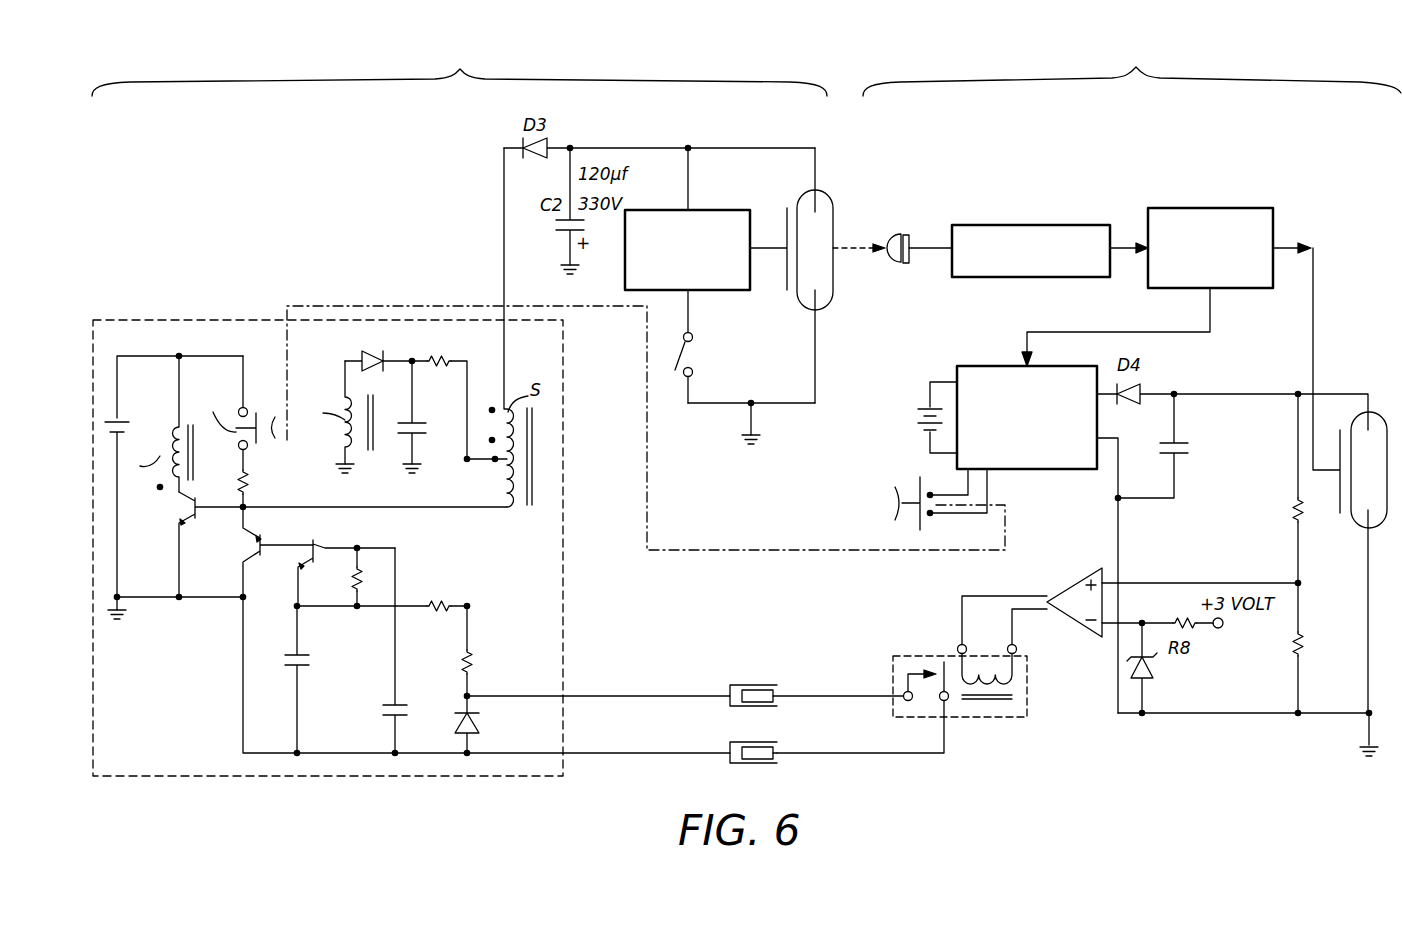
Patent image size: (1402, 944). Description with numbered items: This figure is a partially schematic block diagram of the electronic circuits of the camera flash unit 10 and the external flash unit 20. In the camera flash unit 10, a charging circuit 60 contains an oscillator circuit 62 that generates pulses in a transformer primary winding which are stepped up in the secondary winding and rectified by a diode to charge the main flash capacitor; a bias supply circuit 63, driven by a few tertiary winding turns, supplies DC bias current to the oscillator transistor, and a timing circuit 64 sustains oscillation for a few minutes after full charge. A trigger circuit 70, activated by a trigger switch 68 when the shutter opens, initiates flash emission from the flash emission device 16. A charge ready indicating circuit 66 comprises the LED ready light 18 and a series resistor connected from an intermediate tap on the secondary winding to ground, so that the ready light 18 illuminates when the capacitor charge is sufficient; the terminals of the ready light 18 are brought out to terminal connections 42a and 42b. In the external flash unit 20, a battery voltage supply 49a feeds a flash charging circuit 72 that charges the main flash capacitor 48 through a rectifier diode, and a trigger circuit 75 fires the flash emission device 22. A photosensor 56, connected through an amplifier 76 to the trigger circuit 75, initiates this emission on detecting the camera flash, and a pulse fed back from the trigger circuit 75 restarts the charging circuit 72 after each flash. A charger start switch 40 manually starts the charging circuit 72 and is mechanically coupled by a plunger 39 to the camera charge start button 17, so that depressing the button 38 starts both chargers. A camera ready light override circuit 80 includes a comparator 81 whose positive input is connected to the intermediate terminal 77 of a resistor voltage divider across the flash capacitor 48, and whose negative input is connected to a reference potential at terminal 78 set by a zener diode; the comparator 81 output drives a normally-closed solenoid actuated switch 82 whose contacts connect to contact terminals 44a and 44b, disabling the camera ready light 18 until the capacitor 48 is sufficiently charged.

The camera flash unit 10 is at (459, 64).
The external flash unit 20 is at (1132, 64).
The flash emission device 16 is at (831, 199).
The camera charge start button 17 is at (278, 435).
The LED ready light 18 is at (478, 720).
The flash emission device 22 is at (1385, 415).
The button 38 is at (893, 503).
The plunger 39 is at (683, 548).
The charger start switch 40 is at (936, 516).
The terminal connection 42a is at (734, 685).
The terminal connection 42b is at (734, 742).
The contact terminal 44a is at (776, 688).
The contact terminal 44b is at (776, 742).
The main flash capacitor 48 is at (1168, 443).
The battery voltage supply 49a is at (918, 416).
The photosensor 56 is at (898, 263).
The charging circuit 60 is at (170, 320).
The oscillator circuit 62 is at (197, 499).
The bias supply circuit 63 is at (387, 401).
The timing circuit 64 is at (343, 631).
The charge ready indicating circuit 66 is at (461, 652).
The trigger switch 68 is at (695, 352).
The trigger circuit 70 is at (703, 210).
The flash charging circuit 72 is at (996, 366).
The trigger circuit 75 is at (1226, 208).
The amplifier 76 is at (970, 225).
The intermediate terminal 77 is at (1302, 583).
The reference potential terminal 78 is at (1140, 629).
The camera ready light override circuit 80 is at (1217, 733).
The comparator 81 is at (1087, 578).
The solenoid actuated switch 82 is at (935, 656).